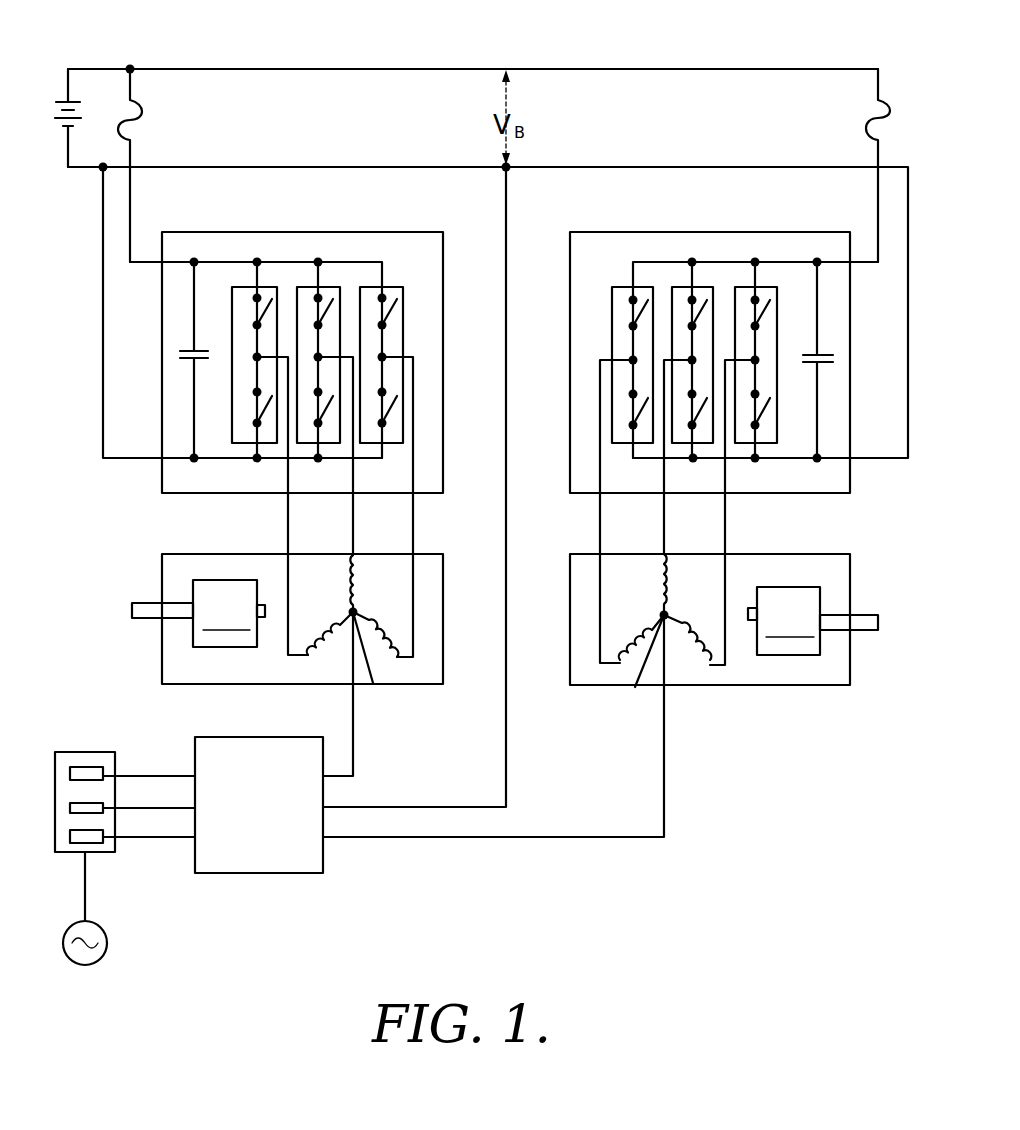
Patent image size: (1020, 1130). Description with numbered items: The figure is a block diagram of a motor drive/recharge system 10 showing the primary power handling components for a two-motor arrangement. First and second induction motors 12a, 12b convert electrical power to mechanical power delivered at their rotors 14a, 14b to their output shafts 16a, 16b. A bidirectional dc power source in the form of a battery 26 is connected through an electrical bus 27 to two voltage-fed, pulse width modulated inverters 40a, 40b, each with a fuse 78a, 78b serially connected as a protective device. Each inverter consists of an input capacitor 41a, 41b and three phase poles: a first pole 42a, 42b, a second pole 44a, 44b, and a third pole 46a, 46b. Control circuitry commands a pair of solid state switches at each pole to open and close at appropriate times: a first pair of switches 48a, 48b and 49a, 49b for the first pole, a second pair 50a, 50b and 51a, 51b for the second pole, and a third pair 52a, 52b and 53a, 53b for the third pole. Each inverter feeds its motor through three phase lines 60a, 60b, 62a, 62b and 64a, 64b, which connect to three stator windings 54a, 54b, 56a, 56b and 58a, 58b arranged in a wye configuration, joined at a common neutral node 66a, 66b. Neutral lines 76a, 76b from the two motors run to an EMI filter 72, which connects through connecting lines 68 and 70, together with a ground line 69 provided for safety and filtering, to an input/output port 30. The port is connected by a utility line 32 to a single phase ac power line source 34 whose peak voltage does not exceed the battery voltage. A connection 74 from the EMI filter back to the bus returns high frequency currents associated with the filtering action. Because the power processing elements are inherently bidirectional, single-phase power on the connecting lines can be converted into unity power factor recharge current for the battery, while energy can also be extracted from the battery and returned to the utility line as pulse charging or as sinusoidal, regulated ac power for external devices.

The motor drive/recharge system 10 is at (718, 847).
The first induction motor 12a is at (141, 637).
The second induction motor 12b is at (816, 548).
The rotor 14a is at (229, 613).
The rotor 14b is at (784, 621).
The output shaft 16a is at (148, 603).
The output shaft 16b is at (867, 612).
The battery 26 is at (56, 100).
The electrical bus 27 is at (296, 67).
The input/output port 30 is at (78, 752).
The utility line 32 is at (87, 897).
The single phase ac power line source 34 is at (98, 967).
The inverter 40a is at (333, 231).
The inverter 40b is at (706, 231).
The input capacitor 41a is at (182, 360).
The input capacitor 41b is at (828, 362).
The first phase pole 42a is at (233, 285).
The first phase pole 42b is at (619, 285).
The second phase pole 44a is at (301, 286).
The second phase pole 44b is at (679, 286).
The third phase pole 46a is at (400, 286).
The third phase pole 46b is at (771, 287).
The solid state switch 48a is at (255, 310).
The solid state switch 48b is at (628, 310).
The solid state switch 49a is at (253, 411).
The solid state switch 49b is at (628, 411).
The solid state switch 50a is at (308, 308).
The solid state switch 50b is at (684, 310).
The solid state switch 51a is at (313, 412).
The solid state switch 51b is at (686, 411).
The solid state switch 52a is at (397, 307).
The solid state switch 52b is at (769, 318).
The solid state switch 53a is at (397, 406).
The solid state switch 53b is at (769, 410).
The stator winding 54a is at (320, 680).
The stator winding 54b is at (628, 641).
The stator winding 56a is at (360, 583).
The stator winding 56b is at (663, 590).
The stator winding 58a is at (385, 637).
The stator winding 58b is at (688, 652).
The phase line 60a is at (287, 535).
The phase line 60b is at (598, 513).
The phase line 62a is at (353, 513).
The phase line 62b is at (663, 512).
The phase line 64a is at (415, 540).
The phase line 64b is at (724, 522).
The common neutral node 66a is at (373, 683).
The common neutral node 66b is at (635, 687).
The connecting line 68 is at (152, 775).
The ground line 69 is at (175, 810).
The connecting line 70 is at (153, 838).
The EMI filter 72 is at (215, 737).
The connection 74 is at (508, 764).
The neutral line 76a is at (354, 742).
The neutral line 76b is at (667, 789).
The fuse 78a is at (137, 126).
The fuse 78b is at (872, 118).